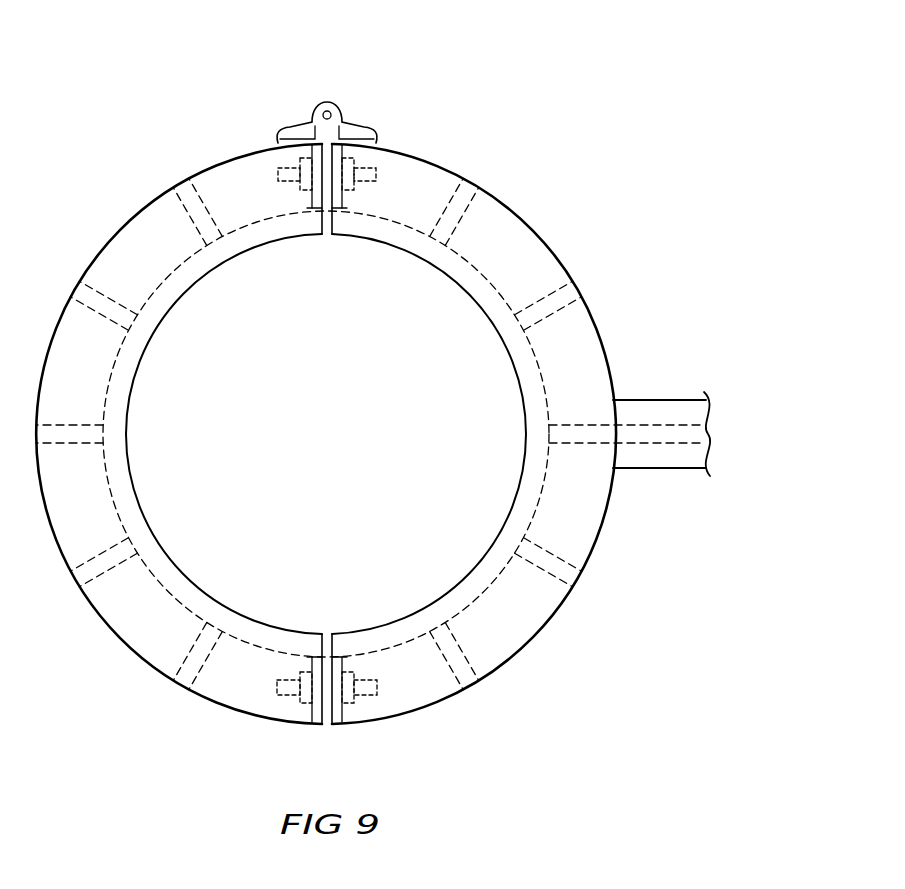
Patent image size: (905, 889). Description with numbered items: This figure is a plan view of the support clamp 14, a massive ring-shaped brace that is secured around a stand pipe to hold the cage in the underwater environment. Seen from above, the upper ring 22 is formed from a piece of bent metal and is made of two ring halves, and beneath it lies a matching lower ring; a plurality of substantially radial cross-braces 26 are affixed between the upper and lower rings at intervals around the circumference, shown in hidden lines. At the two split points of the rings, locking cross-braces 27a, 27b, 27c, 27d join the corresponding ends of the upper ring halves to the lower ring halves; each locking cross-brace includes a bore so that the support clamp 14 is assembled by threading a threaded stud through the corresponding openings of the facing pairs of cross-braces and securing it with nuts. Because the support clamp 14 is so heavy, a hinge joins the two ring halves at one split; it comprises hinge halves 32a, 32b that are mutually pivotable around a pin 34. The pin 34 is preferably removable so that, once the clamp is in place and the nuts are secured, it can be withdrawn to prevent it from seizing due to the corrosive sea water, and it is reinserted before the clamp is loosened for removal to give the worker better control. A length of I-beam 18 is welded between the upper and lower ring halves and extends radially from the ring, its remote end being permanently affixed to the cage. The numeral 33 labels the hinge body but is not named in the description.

The support clamp 14 is at (576, 224).
The I-beam 18 is at (672, 400).
The upper ring 22 is at (595, 548).
The radial cross-braces 26 is at (104, 580).
The locking cross-brace 27a is at (312, 666).
The locking cross-brace 27b is at (343, 712).
The locking cross-brace 27c is at (315, 211).
The locking cross-brace 27d is at (342, 202).
The hinge half 32a is at (280, 125).
The hinge half 32b is at (372, 125).
The clamp body 33 is at (318, 100).
The pin 34 is at (333, 100).